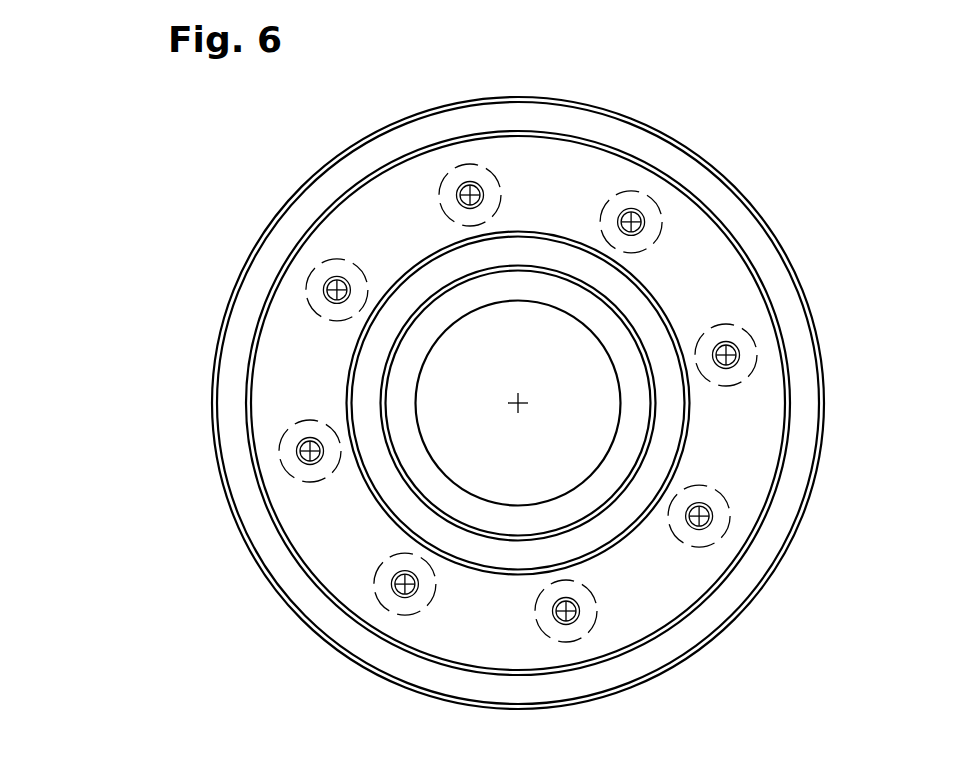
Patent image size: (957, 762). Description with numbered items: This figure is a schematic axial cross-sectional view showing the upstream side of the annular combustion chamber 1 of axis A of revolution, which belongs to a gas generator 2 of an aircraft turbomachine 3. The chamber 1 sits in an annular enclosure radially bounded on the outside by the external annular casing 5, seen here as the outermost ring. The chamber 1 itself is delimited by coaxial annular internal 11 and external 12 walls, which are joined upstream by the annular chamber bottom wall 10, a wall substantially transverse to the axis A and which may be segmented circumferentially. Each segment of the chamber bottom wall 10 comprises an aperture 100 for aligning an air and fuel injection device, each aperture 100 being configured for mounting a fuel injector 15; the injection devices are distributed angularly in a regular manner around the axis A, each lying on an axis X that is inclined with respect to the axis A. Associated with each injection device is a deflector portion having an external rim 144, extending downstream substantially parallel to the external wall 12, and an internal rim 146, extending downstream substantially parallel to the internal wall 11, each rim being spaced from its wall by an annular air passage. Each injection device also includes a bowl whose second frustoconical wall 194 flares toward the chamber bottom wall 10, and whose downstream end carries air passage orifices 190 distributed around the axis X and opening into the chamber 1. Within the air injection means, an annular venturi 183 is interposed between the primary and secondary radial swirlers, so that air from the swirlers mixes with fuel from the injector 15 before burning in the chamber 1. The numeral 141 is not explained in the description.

The annular combustion chamber 1 is at (195, 433).
The gas generator 2 is at (134, 493).
The aircraft turbomachine 3 is at (122, 591).
The external annular casing 5 is at (428, 352).
The chamber bottom wall 10 is at (670, 432).
The internal wall 11 is at (545, 268).
The external wall 12 is at (672, 137).
The fuel injector 15 is at (390, 594).
The aperture 100 is at (717, 497).
The fastening holes 141 is at (737, 330).
The external rim 144 is at (396, 160).
The internal rim 146 is at (404, 277).
The annular venturi 183 is at (417, 593).
The air passage orifices 190 is at (677, 540).
The second frustoconical wall 194 is at (565, 183).
The axis of revolution A is at (513, 408).
The injection device axis X is at (727, 357).